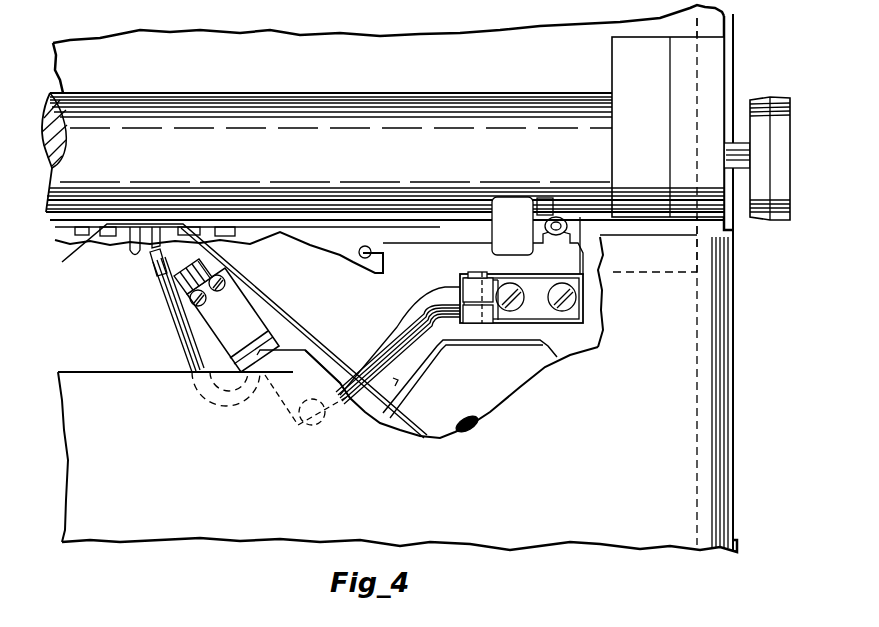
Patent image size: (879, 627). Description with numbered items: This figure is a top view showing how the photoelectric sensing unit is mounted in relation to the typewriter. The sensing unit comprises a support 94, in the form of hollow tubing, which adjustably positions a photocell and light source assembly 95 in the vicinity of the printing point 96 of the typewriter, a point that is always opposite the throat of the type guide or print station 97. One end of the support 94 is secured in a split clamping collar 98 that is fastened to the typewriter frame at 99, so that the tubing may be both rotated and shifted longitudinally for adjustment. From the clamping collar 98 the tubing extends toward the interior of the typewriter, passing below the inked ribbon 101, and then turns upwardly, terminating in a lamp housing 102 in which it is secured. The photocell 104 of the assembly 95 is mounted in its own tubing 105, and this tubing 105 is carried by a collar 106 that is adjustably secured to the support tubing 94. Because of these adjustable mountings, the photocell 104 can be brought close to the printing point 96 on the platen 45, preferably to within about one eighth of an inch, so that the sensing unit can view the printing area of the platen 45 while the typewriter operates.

The platen 45 is at (243, 103).
The printing point 96 is at (147, 217).
The type guide 97 is at (130, 252).
The photocell 104 is at (158, 268).
The tubing 105 is at (173, 308).
The photocell and light source assembly 95 is at (186, 359).
The collar 106 is at (268, 392).
The inked ribbon 101 is at (283, 304).
The lamp housing 102 is at (279, 340).
The support 94 is at (397, 323).
The split clamping collar 98 is at (462, 281).
The typewriter frame 99 is at (600, 346).